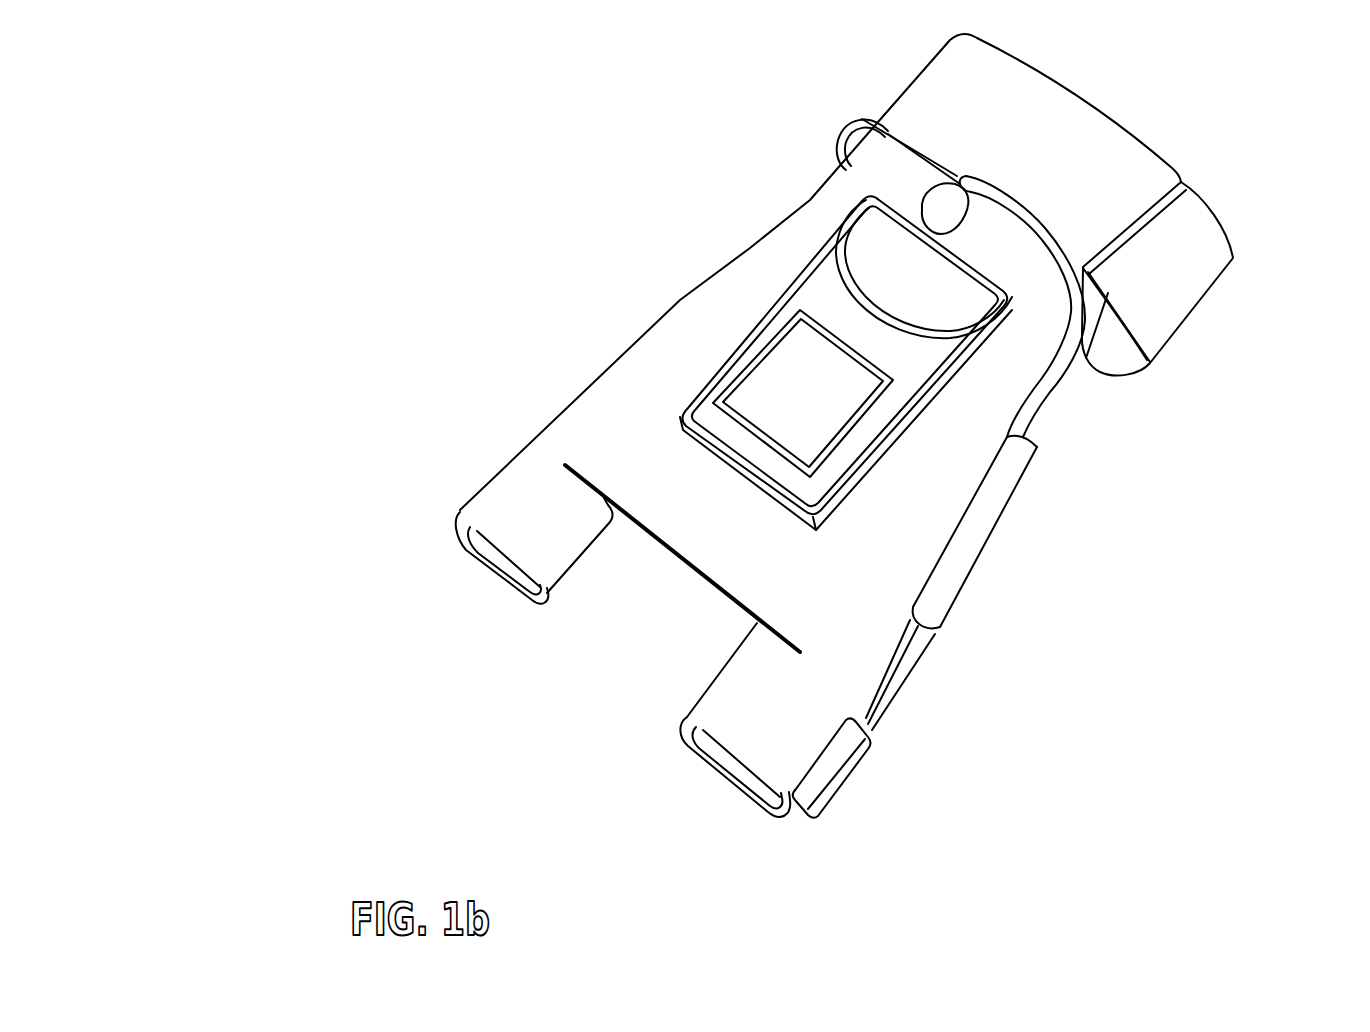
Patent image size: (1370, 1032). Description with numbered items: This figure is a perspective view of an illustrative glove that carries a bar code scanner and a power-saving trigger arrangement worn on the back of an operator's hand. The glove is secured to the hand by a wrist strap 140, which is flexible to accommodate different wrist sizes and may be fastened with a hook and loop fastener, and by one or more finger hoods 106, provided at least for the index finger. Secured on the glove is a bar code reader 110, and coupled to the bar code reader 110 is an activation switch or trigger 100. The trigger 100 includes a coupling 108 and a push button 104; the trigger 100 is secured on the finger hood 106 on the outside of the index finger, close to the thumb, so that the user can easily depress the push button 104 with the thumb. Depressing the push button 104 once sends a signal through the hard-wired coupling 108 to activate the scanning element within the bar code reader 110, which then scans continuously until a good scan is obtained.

The trigger 100 is at (1003, 546).
The push button 104 is at (857, 786).
The finger hood 106 is at (489, 519).
The coupling 108 is at (1056, 425).
The bar code reader 110 is at (796, 289).
The wrist strap 140 is at (897, 77).